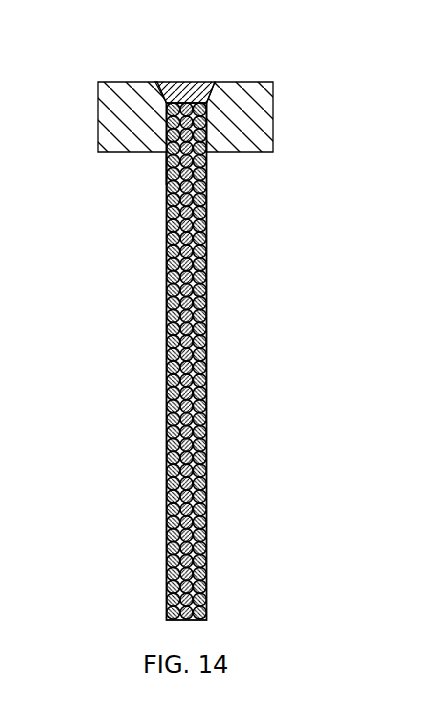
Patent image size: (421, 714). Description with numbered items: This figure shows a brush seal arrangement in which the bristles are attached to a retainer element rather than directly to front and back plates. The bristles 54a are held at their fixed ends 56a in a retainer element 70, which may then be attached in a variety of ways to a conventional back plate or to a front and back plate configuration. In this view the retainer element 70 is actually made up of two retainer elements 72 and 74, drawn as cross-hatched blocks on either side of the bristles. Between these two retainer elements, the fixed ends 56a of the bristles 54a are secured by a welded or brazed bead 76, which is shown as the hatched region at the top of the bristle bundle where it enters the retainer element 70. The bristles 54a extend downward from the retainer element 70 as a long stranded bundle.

The retainer element 70 is at (191, 325).
The retainer element 72 is at (98, 97).
The retainer element 74 is at (273, 107).
The welded or brazed bead 76 is at (180, 81).
The bristles 54a is at (207, 268).
The fixed ends 56a is at (167, 166).